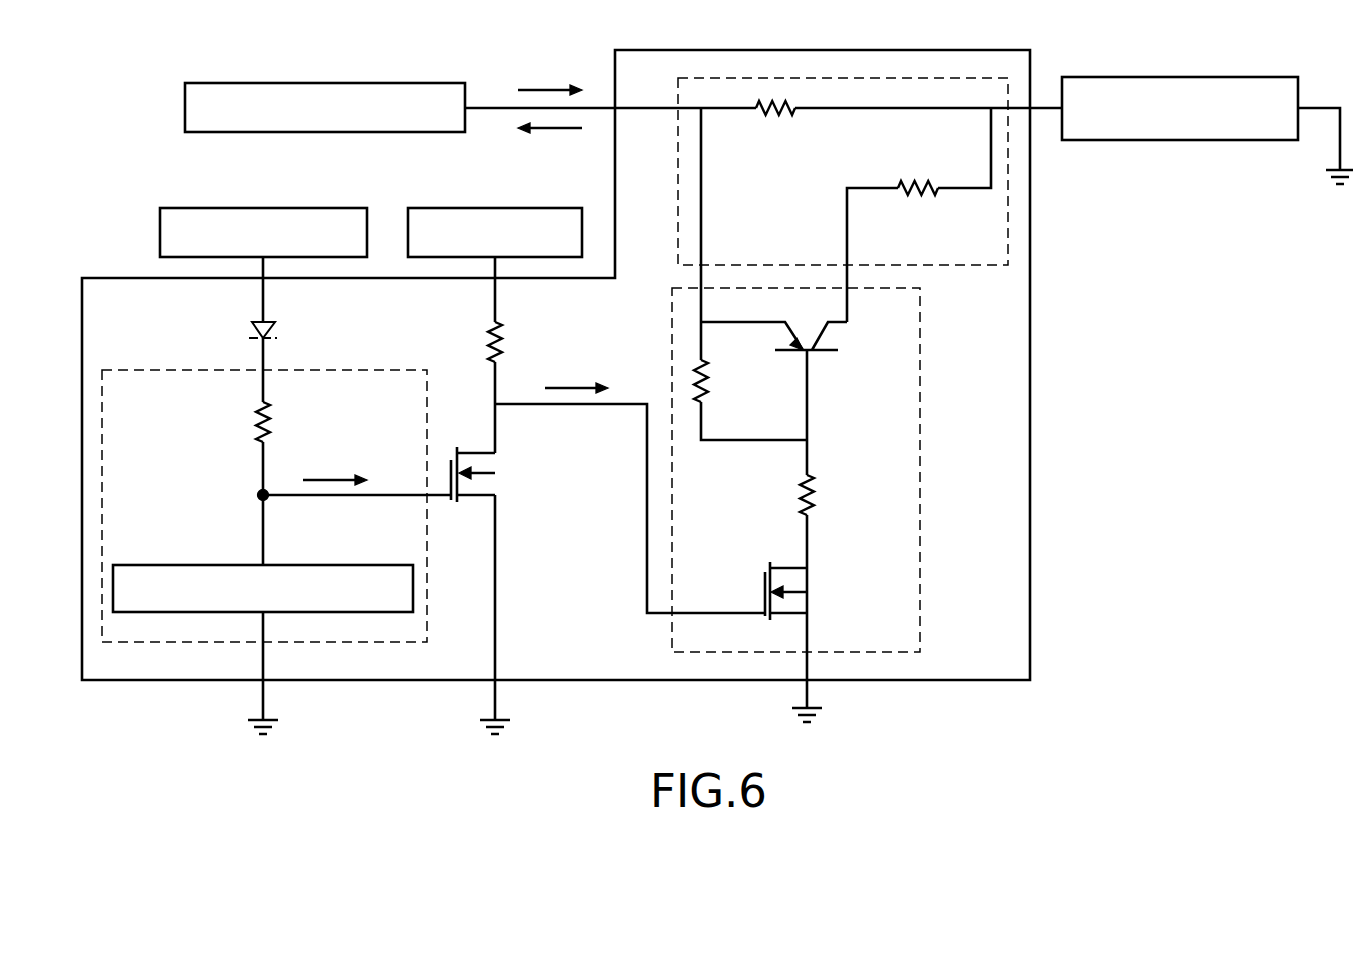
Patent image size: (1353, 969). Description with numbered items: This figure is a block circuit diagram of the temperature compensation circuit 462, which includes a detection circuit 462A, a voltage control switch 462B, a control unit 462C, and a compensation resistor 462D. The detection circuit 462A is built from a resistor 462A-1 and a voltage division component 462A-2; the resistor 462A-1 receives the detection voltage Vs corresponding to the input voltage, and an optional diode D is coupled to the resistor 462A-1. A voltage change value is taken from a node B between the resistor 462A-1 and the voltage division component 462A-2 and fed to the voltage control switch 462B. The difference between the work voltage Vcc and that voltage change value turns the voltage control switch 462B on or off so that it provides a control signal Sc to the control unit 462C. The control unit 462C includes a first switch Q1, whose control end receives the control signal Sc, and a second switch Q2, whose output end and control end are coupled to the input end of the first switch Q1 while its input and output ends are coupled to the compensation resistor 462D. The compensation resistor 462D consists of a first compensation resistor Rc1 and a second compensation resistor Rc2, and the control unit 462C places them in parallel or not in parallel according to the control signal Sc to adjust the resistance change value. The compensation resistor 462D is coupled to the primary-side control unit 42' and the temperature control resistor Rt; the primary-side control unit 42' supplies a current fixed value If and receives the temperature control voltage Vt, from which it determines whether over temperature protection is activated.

The primary-side control unit 42' is at (325, 76).
The temperature compensation circuit 462 is at (992, 370).
The detection circuit 462A is at (348, 393).
The resistor 462A-1 is at (243, 430).
The voltage division component 462A-2 is at (195, 572).
The voltage control switch 462B is at (507, 470).
The control unit 462C is at (900, 452).
The compensation resistor 462D is at (983, 233).
The diode D is at (255, 328).
The node B is at (262, 495).
The first switch Q1 is at (820, 587).
The second switch Q2 is at (842, 338).
The first compensation resistor Rc1 is at (777, 123).
The second compensation resistor Rc2 is at (919, 204).
The temperature control resistor Rt is at (1145, 82).
The detection voltage Vs is at (207, 213).
The work voltage Vcc is at (432, 213).
The current fixed value If is at (550, 75).
The temperature control voltage Vt is at (550, 144).
The control signal Sc is at (576, 374).